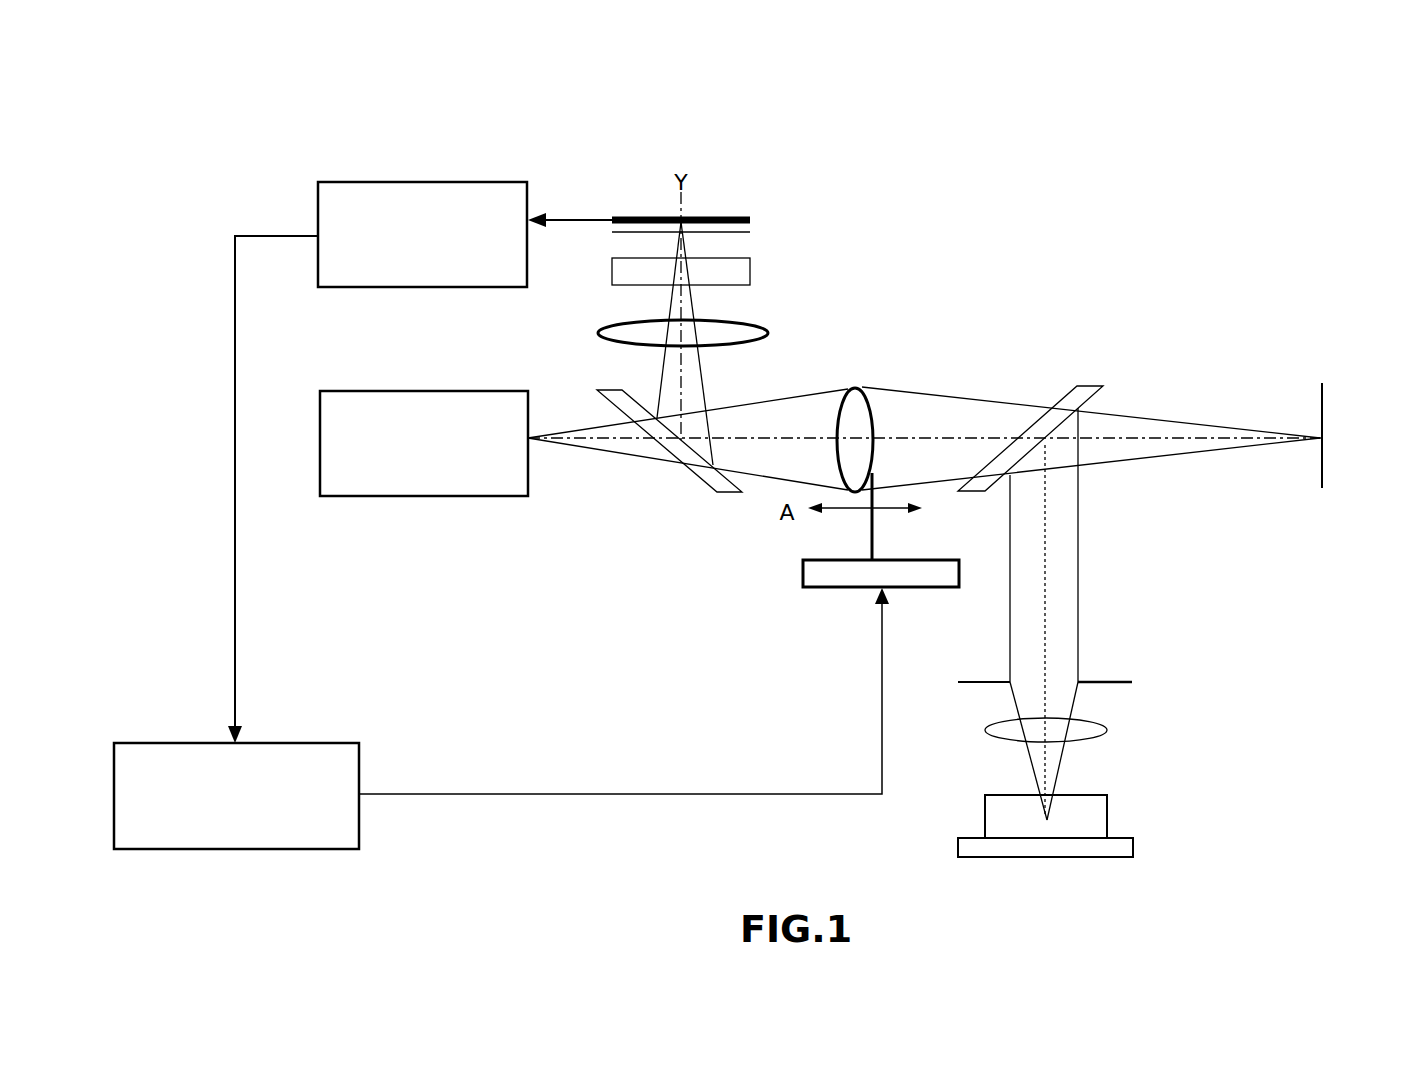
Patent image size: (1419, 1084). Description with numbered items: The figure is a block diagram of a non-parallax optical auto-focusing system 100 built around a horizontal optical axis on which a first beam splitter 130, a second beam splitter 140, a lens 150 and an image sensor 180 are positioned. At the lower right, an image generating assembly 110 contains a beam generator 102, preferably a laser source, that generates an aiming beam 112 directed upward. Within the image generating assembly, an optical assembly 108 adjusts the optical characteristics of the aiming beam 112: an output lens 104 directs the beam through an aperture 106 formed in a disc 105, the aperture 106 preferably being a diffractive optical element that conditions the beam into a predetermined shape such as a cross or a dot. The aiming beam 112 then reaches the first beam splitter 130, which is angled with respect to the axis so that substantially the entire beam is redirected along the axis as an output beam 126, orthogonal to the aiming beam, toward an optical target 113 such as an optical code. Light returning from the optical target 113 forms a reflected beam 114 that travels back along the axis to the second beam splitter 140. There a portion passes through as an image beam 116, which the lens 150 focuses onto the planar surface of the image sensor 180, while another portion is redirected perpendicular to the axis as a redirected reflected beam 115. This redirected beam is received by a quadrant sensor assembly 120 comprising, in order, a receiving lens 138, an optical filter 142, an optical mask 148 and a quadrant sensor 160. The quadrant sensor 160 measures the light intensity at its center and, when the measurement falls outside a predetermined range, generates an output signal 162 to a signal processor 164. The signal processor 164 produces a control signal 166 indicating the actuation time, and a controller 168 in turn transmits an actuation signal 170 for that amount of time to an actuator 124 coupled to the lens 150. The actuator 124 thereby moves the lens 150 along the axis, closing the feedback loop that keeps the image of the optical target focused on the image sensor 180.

The non-parallax optical auto-focusing system 100 is at (968, 142).
The beam generator 102 is at (1107, 823).
The output lens 104 is at (985, 735).
The disc 105 is at (1132, 683).
The aperture 106 is at (1093, 680).
The optical assembly 108 is at (1202, 688).
The image generating assembly 110 is at (1264, 768).
The aiming beam 112 is at (1080, 565).
The optical target 113 is at (1322, 410).
The reflected beam 114 is at (935, 438).
The redirected reflected beam 115 is at (658, 412).
The image beam 116 is at (572, 450).
The quadrant sensor assembly 120 is at (812, 247).
The actuator 124 is at (803, 572).
The output beam 126 is at (1213, 422).
The first beam splitter 130 is at (1097, 386).
The receiving lens 138 is at (767, 332).
The second beam splitter 140 is at (733, 492).
The optical filter 142 is at (612, 262).
The optical mask 148 is at (612, 232).
The lens 150 is at (857, 387).
The quadrant sensor 160 is at (750, 218).
The output signal 162 is at (582, 220).
The signal processor 164 is at (438, 182).
The control signal 166 is at (236, 365).
The controller 168 is at (308, 743).
The actuation signal 170 is at (600, 794).
The image sensor 180 is at (448, 391).